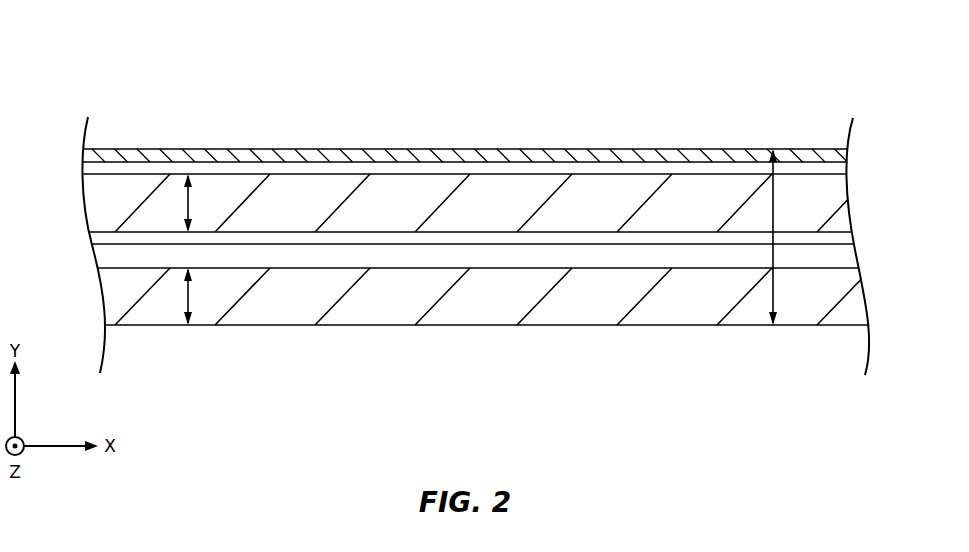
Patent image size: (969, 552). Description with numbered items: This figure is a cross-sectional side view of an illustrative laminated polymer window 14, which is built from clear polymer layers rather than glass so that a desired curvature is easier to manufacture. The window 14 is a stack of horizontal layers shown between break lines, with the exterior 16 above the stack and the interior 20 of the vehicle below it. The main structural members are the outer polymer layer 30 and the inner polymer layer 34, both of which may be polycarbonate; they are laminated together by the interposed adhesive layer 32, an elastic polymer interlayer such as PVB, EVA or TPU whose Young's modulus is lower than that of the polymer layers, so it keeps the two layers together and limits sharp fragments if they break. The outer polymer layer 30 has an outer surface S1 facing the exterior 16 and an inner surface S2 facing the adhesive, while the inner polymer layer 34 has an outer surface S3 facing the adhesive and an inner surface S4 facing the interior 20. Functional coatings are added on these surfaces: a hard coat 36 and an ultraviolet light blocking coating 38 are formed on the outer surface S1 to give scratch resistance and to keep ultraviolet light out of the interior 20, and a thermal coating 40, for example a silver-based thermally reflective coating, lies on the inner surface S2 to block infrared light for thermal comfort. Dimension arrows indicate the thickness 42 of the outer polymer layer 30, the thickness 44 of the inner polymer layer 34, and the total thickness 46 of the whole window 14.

The window 14 is at (160, 78).
The exterior 16 is at (569, 123).
The interior 20 is at (794, 367).
The outer polymer layer 30 is at (838, 198).
The adhesive layer 32 is at (852, 262).
The inner polymer layer 34 is at (860, 302).
The hard coat 36 is at (846, 152).
The ultraviolet light blocking coating 38 is at (847, 170).
The thermal coating 40 is at (850, 238).
The thickness of polymer layer 30 42 is at (188, 204).
The thickness of polymer layer 34 44 is at (188, 298).
The total thickness 46 is at (773, 249).
The outer surface S1 is at (316, 175).
The inner surface S2 is at (480, 232).
The outer surface S3 is at (478, 268).
The inner surface S4 is at (603, 325).